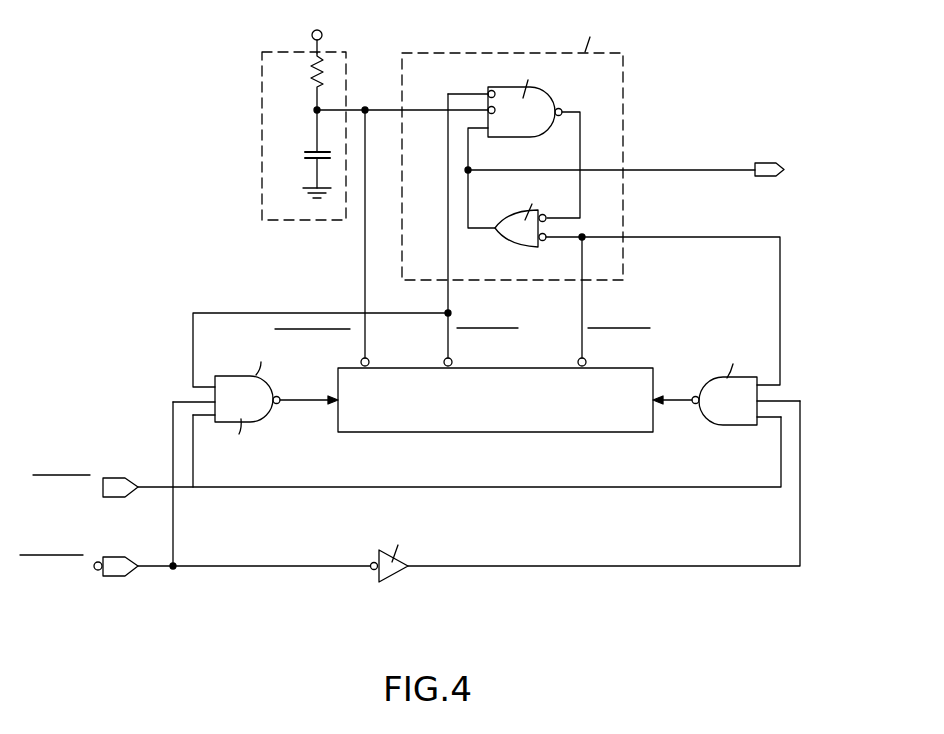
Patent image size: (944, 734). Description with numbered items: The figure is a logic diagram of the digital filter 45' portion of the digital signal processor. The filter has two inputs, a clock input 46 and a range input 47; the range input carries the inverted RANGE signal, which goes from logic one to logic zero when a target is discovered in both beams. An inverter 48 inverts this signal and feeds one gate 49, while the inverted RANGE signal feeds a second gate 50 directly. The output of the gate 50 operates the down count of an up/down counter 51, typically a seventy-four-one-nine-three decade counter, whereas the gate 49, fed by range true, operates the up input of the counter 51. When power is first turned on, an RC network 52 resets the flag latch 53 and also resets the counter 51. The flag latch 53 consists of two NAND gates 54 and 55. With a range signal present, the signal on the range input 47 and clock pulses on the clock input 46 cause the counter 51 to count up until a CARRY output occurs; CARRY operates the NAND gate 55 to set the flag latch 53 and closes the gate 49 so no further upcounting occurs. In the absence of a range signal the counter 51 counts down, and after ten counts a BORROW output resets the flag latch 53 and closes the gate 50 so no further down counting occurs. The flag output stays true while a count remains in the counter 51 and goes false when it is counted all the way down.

The digital filter 45' is at (442, 314).
The clock input 46 is at (125, 478).
The range input 47 is at (125, 557).
The inverter 48 is at (390, 578).
The gate 49 is at (712, 425).
The second gate 50 is at (217, 390).
The up/down counter 51 is at (407, 433).
The RC network 52 is at (262, 77).
The flag latch 53 is at (623, 78).
The NAND gate 54 is at (497, 87).
The NAND gate 55 is at (502, 238).